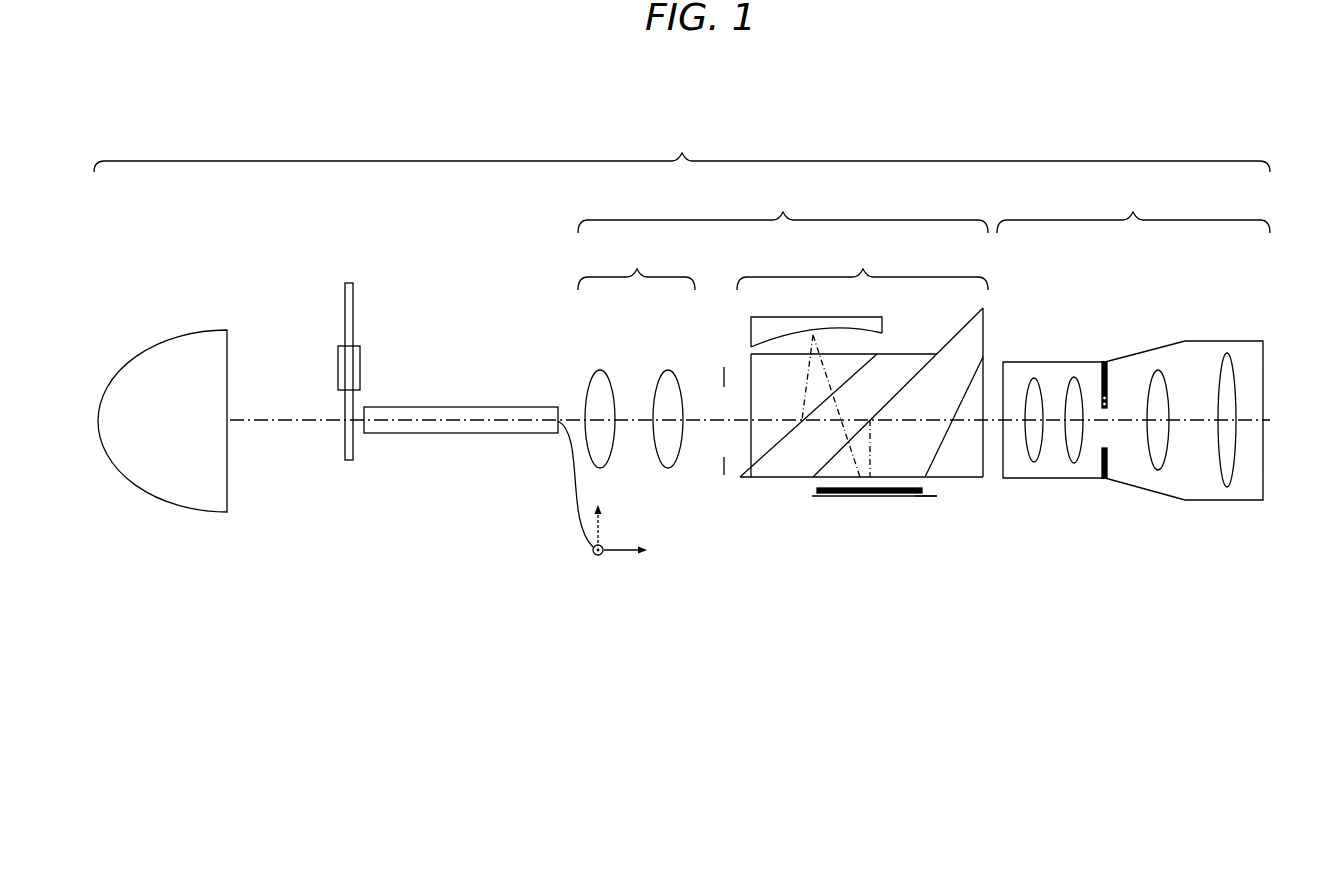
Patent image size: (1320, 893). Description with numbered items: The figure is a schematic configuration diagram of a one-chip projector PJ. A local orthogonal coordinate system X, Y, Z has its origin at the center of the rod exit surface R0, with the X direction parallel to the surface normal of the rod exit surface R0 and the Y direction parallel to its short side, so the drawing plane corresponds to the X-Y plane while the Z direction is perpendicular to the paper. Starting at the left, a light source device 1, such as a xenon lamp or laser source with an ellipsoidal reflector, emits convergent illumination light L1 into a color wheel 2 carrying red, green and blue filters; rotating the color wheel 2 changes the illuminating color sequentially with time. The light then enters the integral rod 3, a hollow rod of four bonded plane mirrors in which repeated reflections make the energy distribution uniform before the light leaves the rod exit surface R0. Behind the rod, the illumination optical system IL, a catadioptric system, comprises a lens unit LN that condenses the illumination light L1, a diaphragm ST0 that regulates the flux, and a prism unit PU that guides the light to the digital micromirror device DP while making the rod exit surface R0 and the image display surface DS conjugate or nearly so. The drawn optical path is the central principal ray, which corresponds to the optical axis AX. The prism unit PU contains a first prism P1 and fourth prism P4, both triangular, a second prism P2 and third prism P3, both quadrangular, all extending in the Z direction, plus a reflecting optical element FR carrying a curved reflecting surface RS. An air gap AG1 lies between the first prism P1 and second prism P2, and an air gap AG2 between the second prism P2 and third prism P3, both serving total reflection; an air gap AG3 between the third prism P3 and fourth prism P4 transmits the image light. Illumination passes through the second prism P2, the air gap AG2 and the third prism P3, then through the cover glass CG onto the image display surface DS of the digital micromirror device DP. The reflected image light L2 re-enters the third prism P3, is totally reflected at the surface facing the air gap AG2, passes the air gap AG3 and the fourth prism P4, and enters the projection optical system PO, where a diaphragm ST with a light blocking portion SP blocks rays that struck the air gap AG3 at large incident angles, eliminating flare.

The light source device 1 is at (227, 502).
The color wheel 2 is at (353, 302).
The integral rod 3 is at (450, 433).
The rod exit surface R0 is at (559, 408).
The illumination light L1 is at (574, 412).
The lens unit LN is at (636, 266).
The illumination optical system IL is at (783, 210).
The projector PJ is at (682, 149).
The prism unit PU is at (862, 266).
The projection optical system PO is at (1133, 209).
The diaphragm ST0 is at (730, 474).
The first prism P1 is at (790, 386).
The second prism P2 is at (881, 403).
The third prism P3 is at (915, 474).
The fourth prism P4 is at (971, 474).
The air gap AG1 is at (771, 451).
The air gap AG2 is at (831, 459).
The air gap AG3 is at (932, 467).
The reflecting optical element FR is at (751, 331).
The curved reflecting surface RS is at (875, 337).
The cover glass CG is at (817, 491).
The digital micromirror device DP is at (886, 524).
The image display surface DS is at (923, 498).
The image light L2 is at (993, 428).
The diaphragm ST is at (1113, 370).
The light blocking portion SP is at (1108, 402).
The optical axis AX is at (767, 420).
The X-direction X is at (635, 550).
The Y-direction Y is at (598, 509).
The Z-direction Z is at (588, 550).